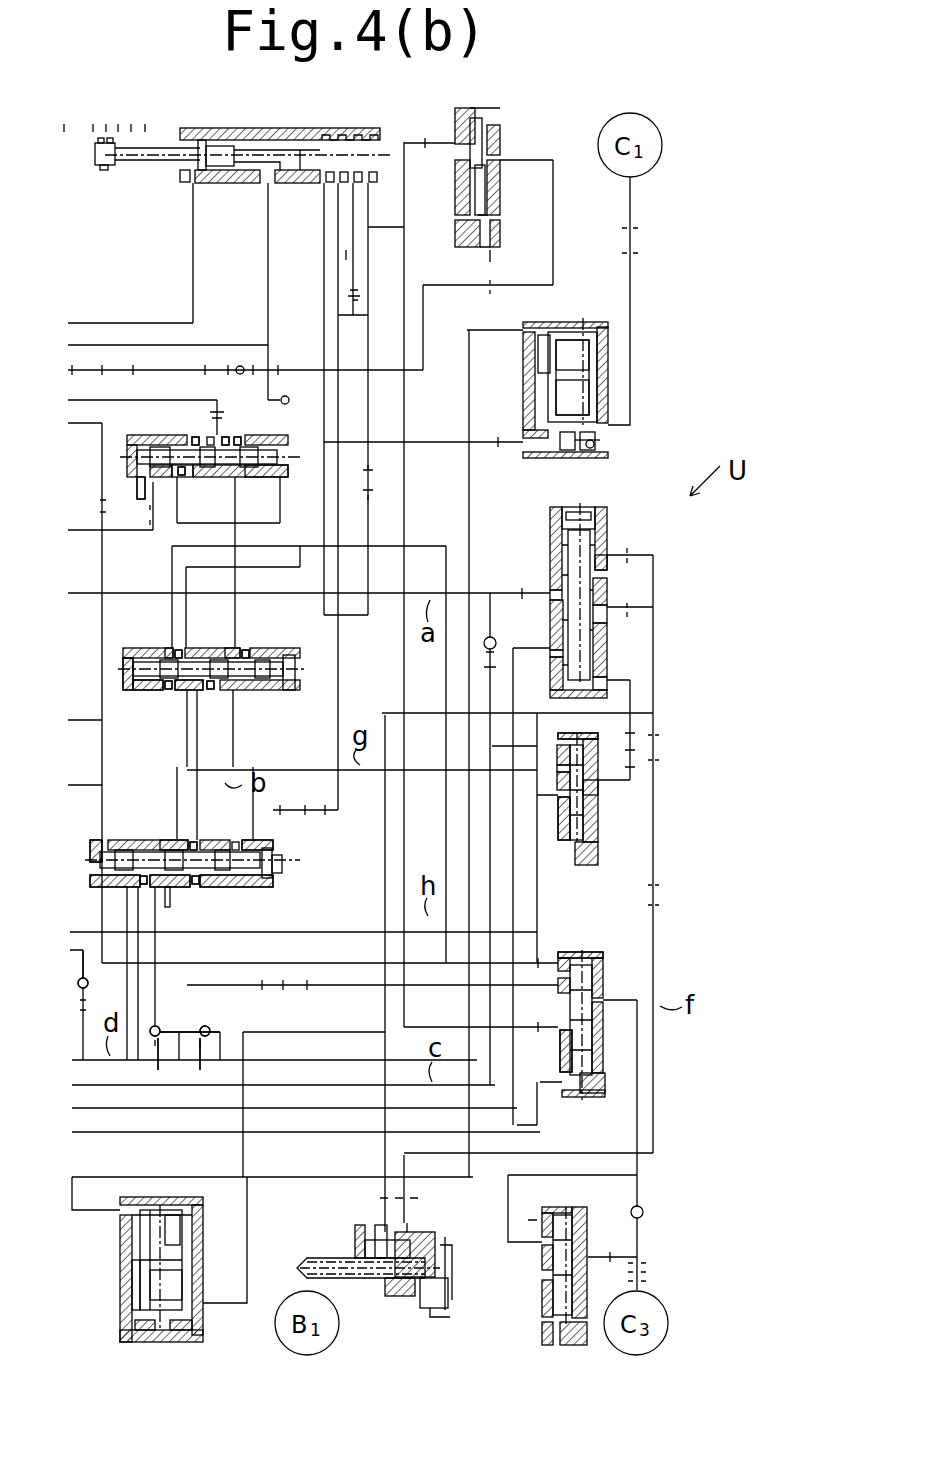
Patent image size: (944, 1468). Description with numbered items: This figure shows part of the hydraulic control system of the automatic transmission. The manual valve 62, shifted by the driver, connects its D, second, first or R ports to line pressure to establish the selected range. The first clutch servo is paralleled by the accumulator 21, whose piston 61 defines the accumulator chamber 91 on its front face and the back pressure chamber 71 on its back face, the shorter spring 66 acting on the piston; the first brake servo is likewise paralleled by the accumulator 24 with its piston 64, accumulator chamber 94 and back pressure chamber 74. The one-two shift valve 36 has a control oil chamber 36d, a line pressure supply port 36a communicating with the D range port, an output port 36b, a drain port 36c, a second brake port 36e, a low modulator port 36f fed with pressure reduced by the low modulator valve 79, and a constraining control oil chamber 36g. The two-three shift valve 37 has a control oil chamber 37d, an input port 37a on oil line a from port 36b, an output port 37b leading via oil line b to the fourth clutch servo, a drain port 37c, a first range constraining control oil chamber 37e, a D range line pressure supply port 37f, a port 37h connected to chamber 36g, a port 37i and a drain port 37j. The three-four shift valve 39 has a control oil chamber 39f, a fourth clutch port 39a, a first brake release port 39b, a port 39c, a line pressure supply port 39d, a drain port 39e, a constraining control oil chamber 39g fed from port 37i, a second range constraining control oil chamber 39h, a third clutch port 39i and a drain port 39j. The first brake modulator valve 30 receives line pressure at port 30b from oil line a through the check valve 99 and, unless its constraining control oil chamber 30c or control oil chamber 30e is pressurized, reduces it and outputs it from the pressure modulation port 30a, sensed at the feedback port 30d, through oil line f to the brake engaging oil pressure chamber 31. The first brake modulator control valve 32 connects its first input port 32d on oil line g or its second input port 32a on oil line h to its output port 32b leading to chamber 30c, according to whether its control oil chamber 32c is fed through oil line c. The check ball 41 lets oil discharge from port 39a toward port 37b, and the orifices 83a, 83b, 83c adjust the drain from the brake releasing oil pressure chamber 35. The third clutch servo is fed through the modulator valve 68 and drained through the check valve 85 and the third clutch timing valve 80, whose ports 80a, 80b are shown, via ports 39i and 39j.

The manual valve 62 is at (286, 128).
The low modulator valve 79 is at (500, 113).
The accumulator 21 is at (590, 322).
The back pressure chamber 71 is at (572, 340).
The shorter spring 66 is at (583, 367).
The accumulator chamber 91 is at (540, 407).
The piston 61 is at (600, 397).
The B1 modulator valve 30 is at (592, 505).
The pressure modulation port 30a is at (607, 601).
The line pressure supply port 30b is at (549, 593).
The constraining control oil chamber 30c is at (607, 677).
The feedback port 30d is at (607, 553).
The control oil chamber 30e is at (550, 653).
The check valve 99 is at (496, 640).
The B1 modulator control valve 32 is at (583, 867).
The second input port 32a is at (560, 840).
The output port 32b is at (598, 787).
The control oil chamber 32c is at (556, 733).
The first input port 32d is at (537, 782).
The C3 timing valve 80 is at (603, 975).
The port of valve 80 80a is at (570, 950).
The port of valve 80 80b is at (553, 1032).
The modulator valve 68 is at (578, 1207).
The check valve 85 is at (645, 1212).
The accumulator 24 is at (122, 1258).
The back pressure chamber 74 is at (190, 1228).
The piston 64 is at (140, 1292).
The accumulator chamber 94 is at (170, 1290).
The brake engaging oil pressure chamber 31 is at (410, 1226).
The brake releasing oil pressure chamber 35 is at (385, 1230).
The 1-2 shift valve 36 is at (275, 437).
The line pressure supply port 36a is at (178, 480).
The output port 36b is at (185, 478).
The drain port 36c is at (200, 437).
The control oil chamber 36d is at (153, 483).
The B2 port 36e is at (226, 435).
The low modulator port 36f is at (240, 435).
The constraining control oil chamber 36g is at (262, 478).
The 2-3 shift valve 37 is at (300, 668).
The port of valve 37 37a is at (235, 648).
The output port 37b is at (215, 690).
The drain port 37c is at (210, 690).
The control oil chamber 37d is at (125, 685).
The 1st range constraining control oil chamber 37e is at (262, 648).
The D range line pressure supply port 37f is at (178, 648).
The port 37h is at (170, 648).
The port 37i is at (190, 690).
The drain port 37j is at (150, 700).
The 3-4 shift valve 39 is at (278, 865).
The C0 port 39a is at (130, 880).
The B1 release port 39b is at (140, 890).
The port 39c is at (170, 892).
The line pressure supply port 39d is at (172, 840).
The drain port 39e is at (150, 920).
The control oil chamber 39f is at (92, 840).
The constraining control oil chamber 39g is at (225, 840).
The 2nd range constraining control oil chamber 39h is at (262, 840).
The C3 port 39i is at (190, 900).
The drain port 39j is at (215, 890).
The check ball 41 is at (78, 990).
The orifice 83a is at (184, 1011).
The orifice 83b is at (158, 1072).
The orifice 83c is at (200, 1072).